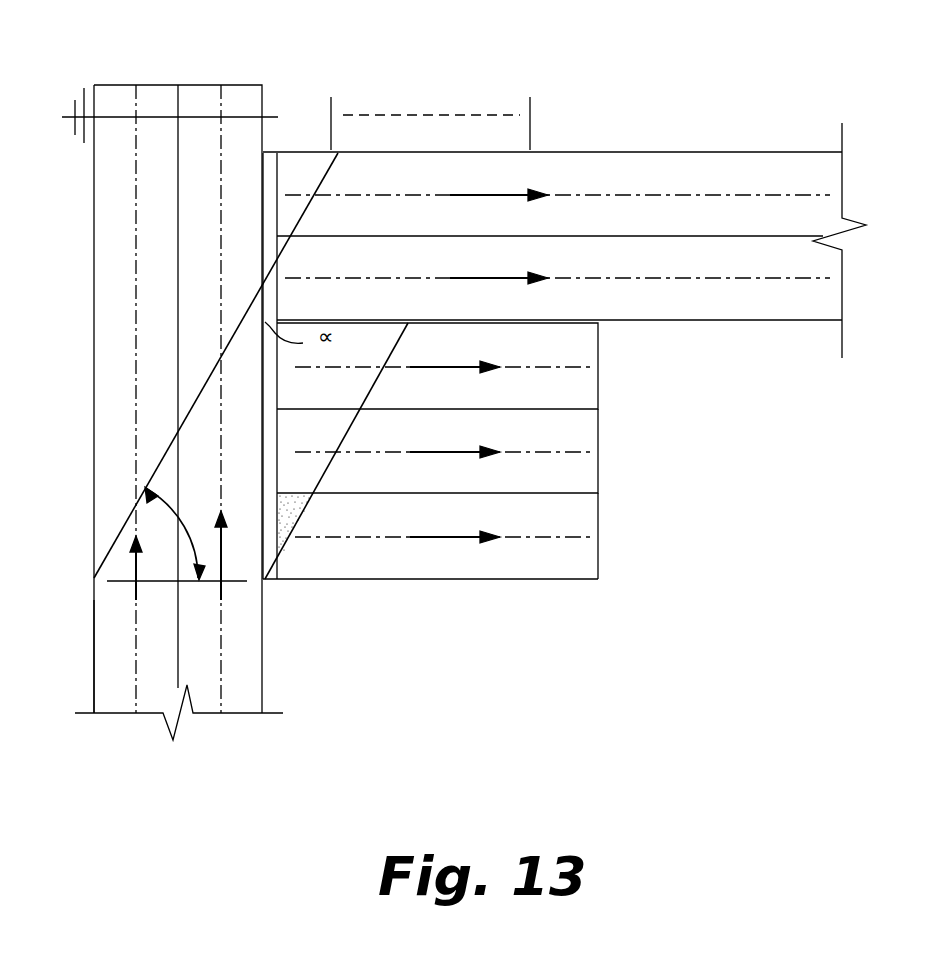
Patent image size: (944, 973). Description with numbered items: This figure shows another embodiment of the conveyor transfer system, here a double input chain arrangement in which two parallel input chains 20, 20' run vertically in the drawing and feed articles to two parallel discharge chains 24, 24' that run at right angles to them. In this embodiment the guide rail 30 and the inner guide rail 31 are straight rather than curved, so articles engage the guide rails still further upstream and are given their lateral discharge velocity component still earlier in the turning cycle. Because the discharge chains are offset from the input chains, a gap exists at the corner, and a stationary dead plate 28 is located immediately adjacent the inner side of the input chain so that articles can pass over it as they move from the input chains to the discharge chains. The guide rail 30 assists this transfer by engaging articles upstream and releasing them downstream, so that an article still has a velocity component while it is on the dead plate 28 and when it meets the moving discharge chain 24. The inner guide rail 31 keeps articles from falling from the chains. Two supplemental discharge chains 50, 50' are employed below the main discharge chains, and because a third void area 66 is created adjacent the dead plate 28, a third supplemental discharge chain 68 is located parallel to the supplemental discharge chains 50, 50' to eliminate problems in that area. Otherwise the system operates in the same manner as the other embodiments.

The input chain 20 is at (174, 422).
The input chain 20' is at (70, 656).
The discharge chain 24 is at (564, 219).
The discharge chain 24' is at (559, 325).
The dead plate 28 is at (277, 164).
The guide rail 30 is at (201, 393).
The inner guide rail 31 is at (332, 462).
The supplemental discharge chain 50 is at (468, 366).
The supplemental discharge chain 50' is at (471, 451).
The third void area 66 is at (300, 517).
The third supplemental discharge chain 68 is at (588, 565).